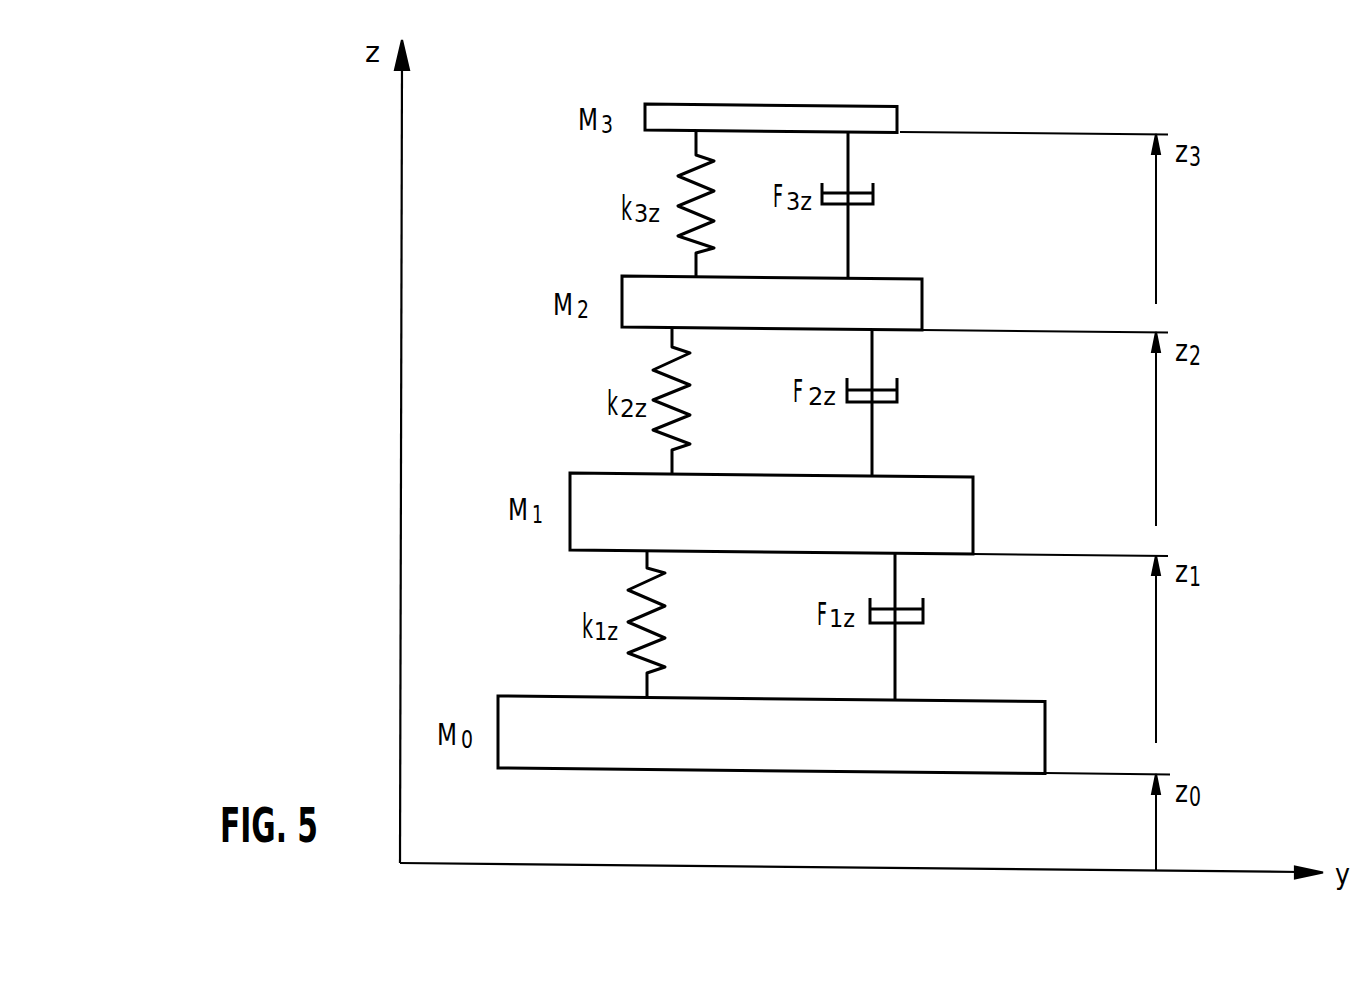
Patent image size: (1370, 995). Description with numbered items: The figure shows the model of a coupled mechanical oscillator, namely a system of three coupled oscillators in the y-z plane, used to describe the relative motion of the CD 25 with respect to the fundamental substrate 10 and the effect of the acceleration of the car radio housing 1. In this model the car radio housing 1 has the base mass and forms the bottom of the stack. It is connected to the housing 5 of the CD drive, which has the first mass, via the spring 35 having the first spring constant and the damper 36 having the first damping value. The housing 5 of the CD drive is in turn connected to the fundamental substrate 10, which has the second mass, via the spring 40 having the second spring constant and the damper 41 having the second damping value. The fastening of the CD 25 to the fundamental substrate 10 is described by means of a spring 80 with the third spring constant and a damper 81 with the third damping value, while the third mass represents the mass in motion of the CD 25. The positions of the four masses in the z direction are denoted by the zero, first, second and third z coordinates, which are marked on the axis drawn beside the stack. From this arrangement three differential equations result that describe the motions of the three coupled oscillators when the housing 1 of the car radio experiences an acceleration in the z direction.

The car radio housing 1 is at (737, 745).
The housing of the CD drive 5 is at (750, 545).
The fundamental substrate 10 is at (764, 323).
The CD 25 is at (772, 106).
The spring 35 is at (650, 648).
The damper 36 is at (926, 614).
The spring 40 is at (672, 425).
The damper 41 is at (899, 398).
The spring 80 is at (696, 229).
The damper 81 is at (876, 200).